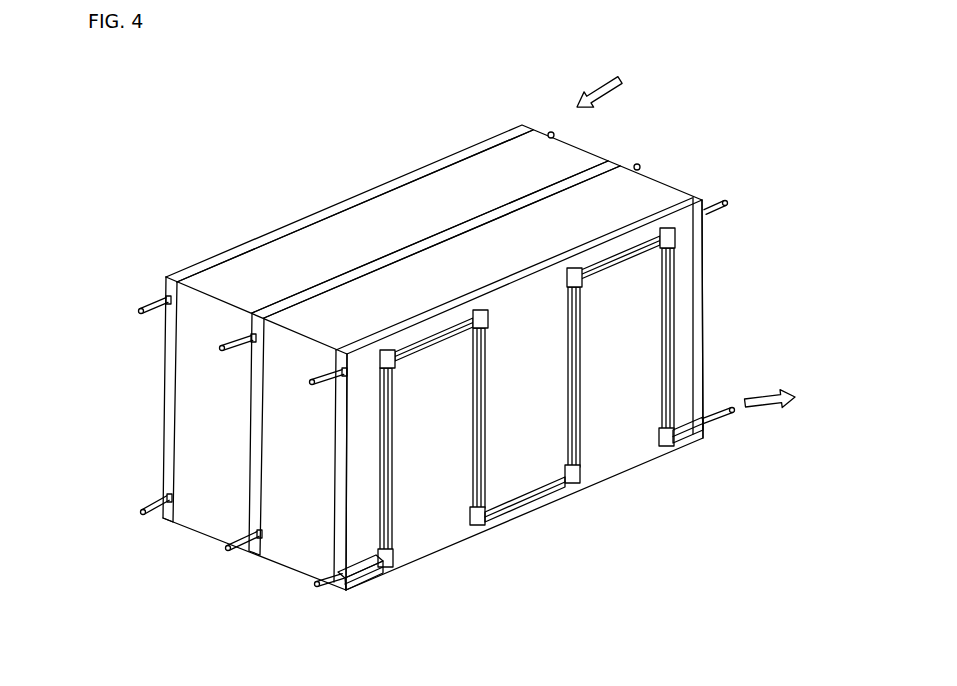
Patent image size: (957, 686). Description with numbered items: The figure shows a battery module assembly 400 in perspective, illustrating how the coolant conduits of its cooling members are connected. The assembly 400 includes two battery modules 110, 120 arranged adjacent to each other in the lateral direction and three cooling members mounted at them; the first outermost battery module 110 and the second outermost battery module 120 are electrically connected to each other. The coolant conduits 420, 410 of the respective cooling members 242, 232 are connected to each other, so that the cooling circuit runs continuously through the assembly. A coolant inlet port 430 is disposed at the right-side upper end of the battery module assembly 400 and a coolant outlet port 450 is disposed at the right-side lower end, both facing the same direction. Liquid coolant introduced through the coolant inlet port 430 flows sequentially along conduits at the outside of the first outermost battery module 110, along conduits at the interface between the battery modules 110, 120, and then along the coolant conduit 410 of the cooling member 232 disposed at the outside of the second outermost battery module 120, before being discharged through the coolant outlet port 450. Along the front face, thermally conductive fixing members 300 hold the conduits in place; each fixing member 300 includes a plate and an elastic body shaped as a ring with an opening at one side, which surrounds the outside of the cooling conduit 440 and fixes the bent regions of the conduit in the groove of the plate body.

The battery module assembly 400 is at (174, 157).
The first outermost battery module 110 is at (554, 156).
The second outermost battery module 120 is at (629, 186).
The cooling member 242 is at (478, 210).
The coolant inlet port 430 is at (550, 132).
The cooling member 232 is at (634, 456).
The thermally conductive fixing member 300 is at (676, 239).
The cooling conduit 440 is at (535, 510).
The coolant conduit 420 is at (311, 380).
The coolant conduit 410 is at (331, 590).
The coolant outlet port 450 is at (735, 414).